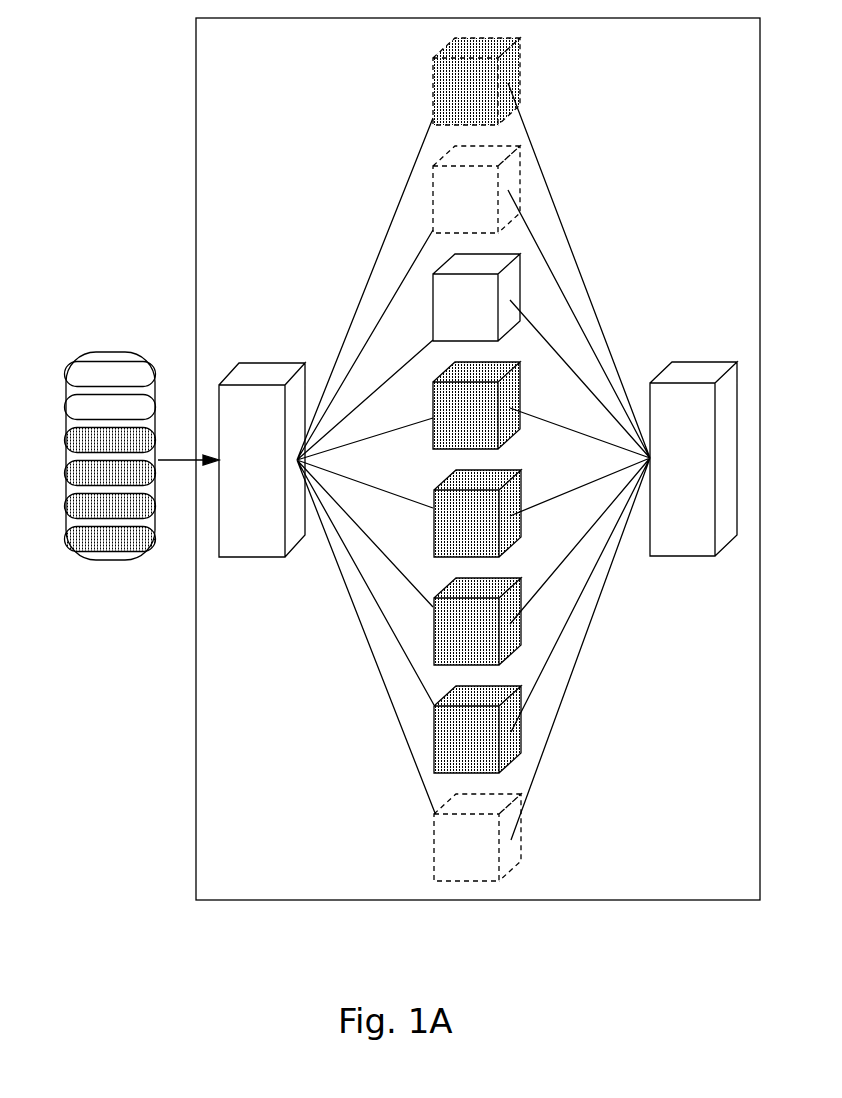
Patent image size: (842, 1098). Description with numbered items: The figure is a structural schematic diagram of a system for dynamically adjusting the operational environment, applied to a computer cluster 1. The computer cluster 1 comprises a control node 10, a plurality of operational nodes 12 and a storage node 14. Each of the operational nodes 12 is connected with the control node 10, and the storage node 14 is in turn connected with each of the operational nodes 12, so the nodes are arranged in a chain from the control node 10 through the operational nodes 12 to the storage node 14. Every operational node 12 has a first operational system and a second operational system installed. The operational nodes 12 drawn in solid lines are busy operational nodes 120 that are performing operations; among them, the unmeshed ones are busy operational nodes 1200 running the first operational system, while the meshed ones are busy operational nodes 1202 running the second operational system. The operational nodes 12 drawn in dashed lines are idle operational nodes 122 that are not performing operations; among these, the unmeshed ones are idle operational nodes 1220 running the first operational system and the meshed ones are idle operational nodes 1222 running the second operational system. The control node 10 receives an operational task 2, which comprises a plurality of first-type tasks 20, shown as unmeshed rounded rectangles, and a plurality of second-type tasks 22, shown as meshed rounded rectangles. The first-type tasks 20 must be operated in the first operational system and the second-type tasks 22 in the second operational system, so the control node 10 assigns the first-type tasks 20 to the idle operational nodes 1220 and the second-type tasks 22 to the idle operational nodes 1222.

The computer cluster 1 is at (208, 62).
The operational task 2 is at (107, 455).
The first-type tasks 20 is at (135, 373).
The second-type tasks 22 is at (138, 430).
The control node 10 is at (262, 373).
The storage node 14 is at (693, 372).
The operational nodes 12 is at (569, 459).
The busy operational nodes 120 is at (540, 513).
The busy operational nodes running the first operational system 1200 is at (475, 335).
The busy operational nodes running the second operational system 1202 is at (520, 390).
The idle operational nodes 122 is at (531, 459).
The idle operational nodes running the first operational system 1220 is at (508, 177).
The idle operational nodes running the second operational system 1222 is at (520, 72).